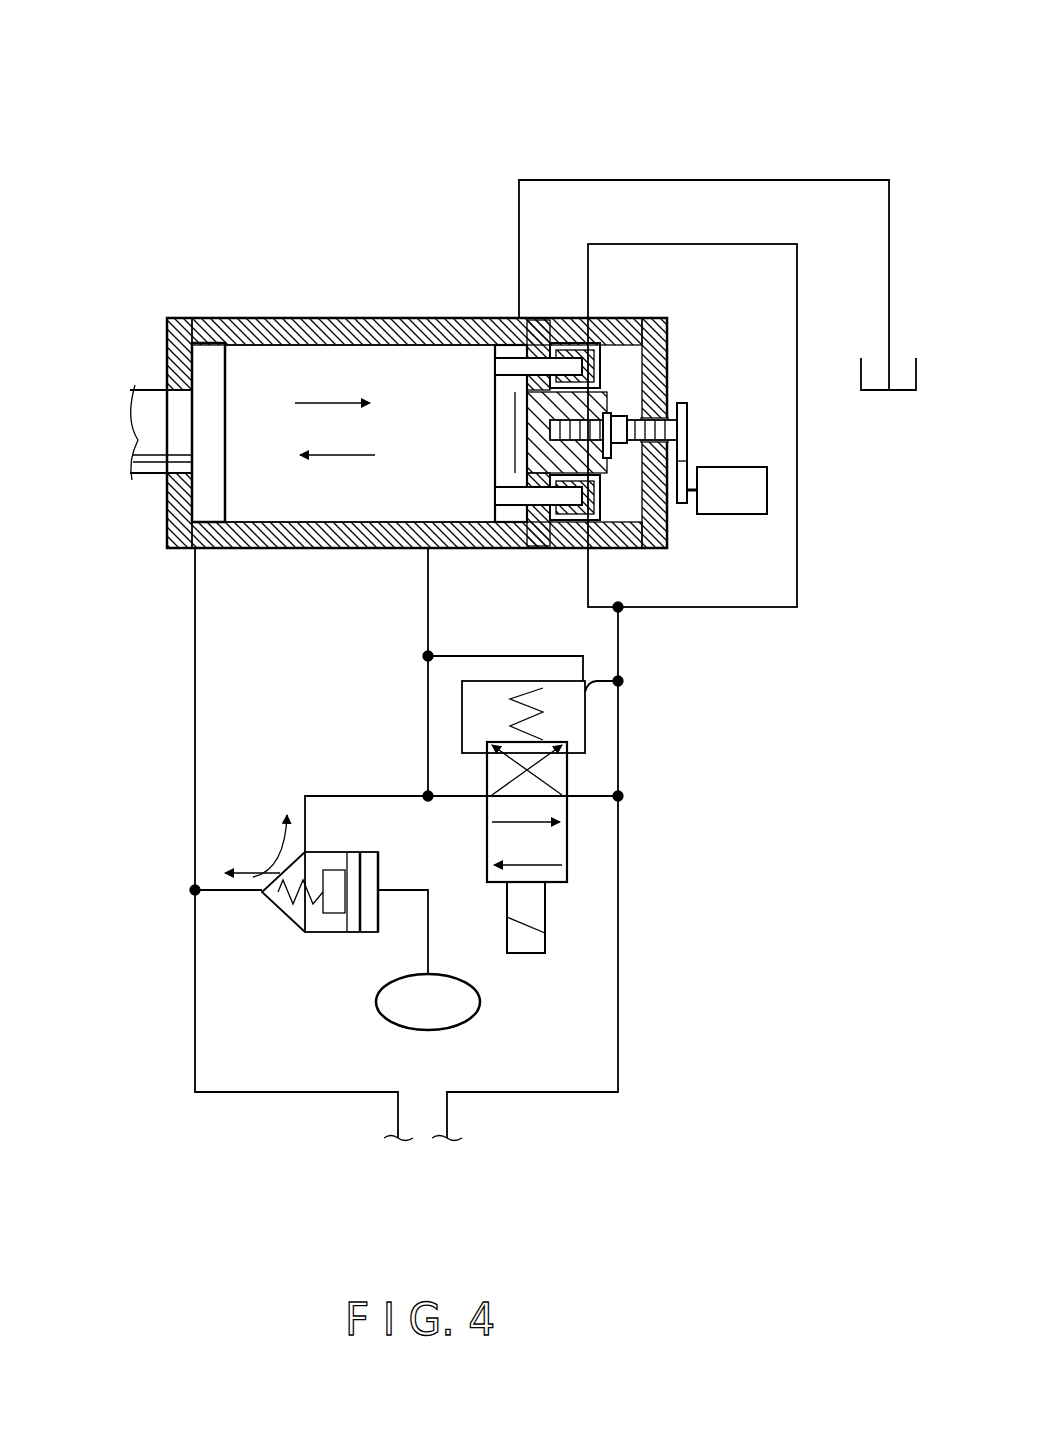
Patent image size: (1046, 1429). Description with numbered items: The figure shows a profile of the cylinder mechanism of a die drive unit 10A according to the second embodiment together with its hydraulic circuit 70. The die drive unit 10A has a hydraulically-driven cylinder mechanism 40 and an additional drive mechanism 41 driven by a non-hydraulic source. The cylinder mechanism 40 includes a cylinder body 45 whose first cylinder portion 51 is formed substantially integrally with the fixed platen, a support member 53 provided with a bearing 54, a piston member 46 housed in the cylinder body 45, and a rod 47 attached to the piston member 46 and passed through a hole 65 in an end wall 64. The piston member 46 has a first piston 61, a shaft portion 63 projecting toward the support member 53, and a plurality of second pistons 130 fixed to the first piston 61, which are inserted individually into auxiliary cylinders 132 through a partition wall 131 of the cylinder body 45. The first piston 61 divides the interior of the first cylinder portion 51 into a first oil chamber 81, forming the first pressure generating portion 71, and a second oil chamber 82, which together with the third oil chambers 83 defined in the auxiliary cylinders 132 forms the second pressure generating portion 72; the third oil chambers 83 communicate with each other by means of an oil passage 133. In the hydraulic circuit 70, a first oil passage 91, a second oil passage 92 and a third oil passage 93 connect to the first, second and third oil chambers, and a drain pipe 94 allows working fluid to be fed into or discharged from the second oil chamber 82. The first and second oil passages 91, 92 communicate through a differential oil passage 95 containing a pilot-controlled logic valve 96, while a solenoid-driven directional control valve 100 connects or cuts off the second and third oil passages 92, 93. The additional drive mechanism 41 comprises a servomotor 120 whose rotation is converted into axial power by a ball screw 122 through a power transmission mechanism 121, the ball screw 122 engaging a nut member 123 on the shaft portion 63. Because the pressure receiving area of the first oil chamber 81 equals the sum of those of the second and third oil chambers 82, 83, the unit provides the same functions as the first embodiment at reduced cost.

The die drive unit 10A is at (451, 122).
The cylinder mechanism 40 is at (160, 350).
The additional drive mechanism 41 is at (690, 512).
The cylinder body 45 is at (398, 318).
The piston member 46 is at (292, 512).
The rod 47 is at (157, 425).
The first cylinder portion 51 is at (263, 318).
The support member 53 is at (667, 338).
The bearing 54 is at (600, 430).
The first piston 61 is at (457, 365).
The shaft portion 63 is at (625, 395).
The end wall 64 is at (165, 507).
The hole 65 is at (175, 462).
The hydraulic circuit 70 is at (772, 873).
The first pressure generating portion 71 is at (207, 340).
The second pressure generating portion 72 is at (503, 338).
The first oil chamber 81 is at (235, 525).
The second oil chamber 82 is at (520, 505).
The third oil chamber 83 is at (563, 345).
The first oil passage 91 is at (195, 712).
The second oil passage 92 is at (428, 618).
The third oil passage 93 is at (625, 678).
The drain pipe 94 is at (705, 178).
The differential oil passage 95 is at (322, 795).
The logic valve 96 is at (312, 934).
The directional control valve 100 is at (550, 888).
The servomotor 120 is at (752, 515).
The power transmission mechanism 121 is at (690, 460).
The ball screw 122 is at (686, 428).
The nut member 123 is at (617, 445).
The second piston 130 is at (590, 365).
The partition wall 131 is at (540, 320).
The auxiliary cylinder 132 is at (630, 343).
The oil passage 133 is at (797, 500).